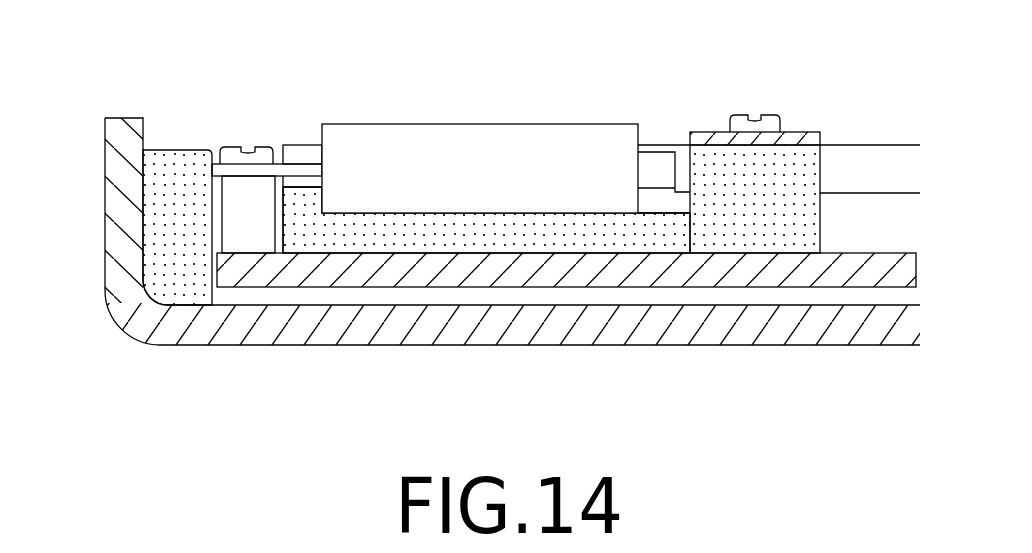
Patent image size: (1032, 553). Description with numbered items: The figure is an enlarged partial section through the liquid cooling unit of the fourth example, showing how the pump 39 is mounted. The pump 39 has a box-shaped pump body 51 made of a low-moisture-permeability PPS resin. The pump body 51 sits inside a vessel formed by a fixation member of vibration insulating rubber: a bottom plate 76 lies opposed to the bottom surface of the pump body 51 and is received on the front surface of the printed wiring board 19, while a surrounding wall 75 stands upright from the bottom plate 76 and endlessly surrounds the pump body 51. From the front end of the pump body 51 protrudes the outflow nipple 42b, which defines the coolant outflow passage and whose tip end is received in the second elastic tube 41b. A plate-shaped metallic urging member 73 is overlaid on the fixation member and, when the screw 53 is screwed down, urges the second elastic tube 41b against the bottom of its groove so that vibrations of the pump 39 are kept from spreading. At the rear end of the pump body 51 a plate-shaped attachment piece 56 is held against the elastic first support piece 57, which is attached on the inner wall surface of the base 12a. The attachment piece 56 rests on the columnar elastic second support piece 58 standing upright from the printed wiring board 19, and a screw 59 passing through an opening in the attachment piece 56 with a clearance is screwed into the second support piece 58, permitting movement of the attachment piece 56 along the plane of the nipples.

The base 12a is at (218, 347).
The printed wiring board 19 is at (425, 287).
The pump 39 is at (412, 75).
The second elastic tube 41b is at (845, 145).
The outflow nipple 42b is at (650, 153).
The pump body 51 is at (475, 124).
The screw 53 is at (748, 116).
The attachment piece 56 is at (233, 162).
The first support piece 57 is at (167, 148).
The second support piece 58 is at (240, 227).
The screw 59 is at (258, 148).
The urging member 73 is at (803, 137).
The surrounding wall 75 is at (800, 197).
The bottom plate 76 is at (608, 235).